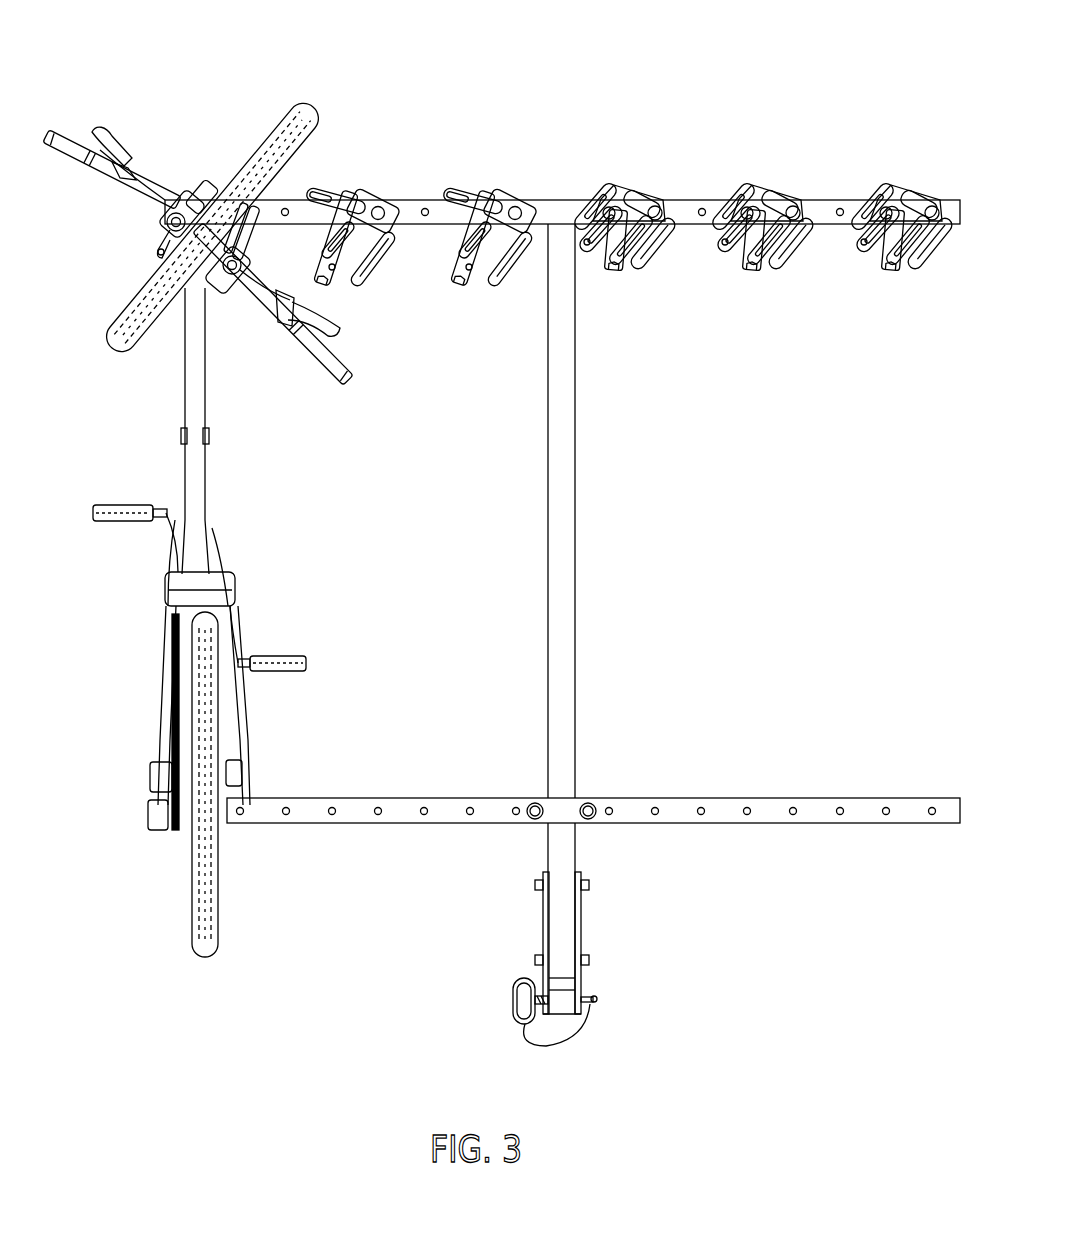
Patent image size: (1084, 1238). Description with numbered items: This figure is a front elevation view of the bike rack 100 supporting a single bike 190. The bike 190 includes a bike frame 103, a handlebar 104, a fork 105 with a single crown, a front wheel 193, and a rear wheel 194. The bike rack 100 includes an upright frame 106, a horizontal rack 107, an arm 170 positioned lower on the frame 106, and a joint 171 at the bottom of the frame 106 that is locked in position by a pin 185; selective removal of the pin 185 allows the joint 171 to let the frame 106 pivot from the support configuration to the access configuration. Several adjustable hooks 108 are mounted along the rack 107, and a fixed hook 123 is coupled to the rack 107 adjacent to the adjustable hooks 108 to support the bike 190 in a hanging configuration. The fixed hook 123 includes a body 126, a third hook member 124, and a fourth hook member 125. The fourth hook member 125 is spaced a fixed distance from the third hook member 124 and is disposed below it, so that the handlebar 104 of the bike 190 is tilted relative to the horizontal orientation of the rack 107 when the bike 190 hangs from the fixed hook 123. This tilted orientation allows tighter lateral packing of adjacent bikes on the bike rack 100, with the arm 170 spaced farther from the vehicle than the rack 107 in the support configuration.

The bike rack 100 is at (662, 74).
The bike frame 103 is at (198, 390).
The handlebar 104 is at (265, 302).
The fork 105 is at (158, 228).
The frame 106 is at (572, 362).
The rack 107 is at (680, 208).
The adjustable hooks 108 is at (380, 182).
The fixed hook 123 is at (198, 184).
The third hook member 124 is at (176, 205).
The fourth hook member 125 is at (246, 236).
The body 126 is at (205, 192).
The arm 170 is at (625, 812).
The joint 171 is at (583, 917).
The pin 185 is at (596, 996).
The bike 190 is at (72, 329).
The front wheel 193 is at (292, 142).
The rear wheel 194 is at (205, 908).